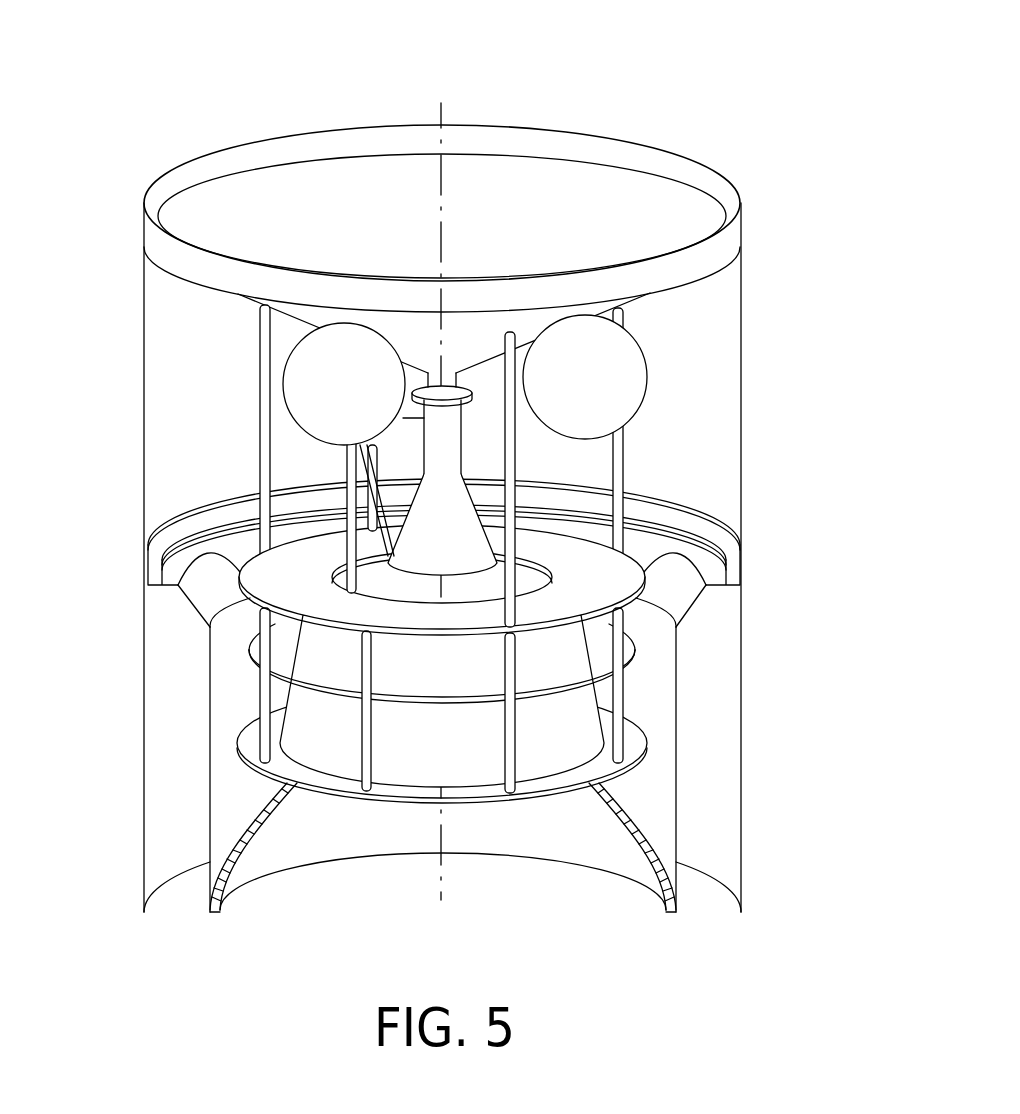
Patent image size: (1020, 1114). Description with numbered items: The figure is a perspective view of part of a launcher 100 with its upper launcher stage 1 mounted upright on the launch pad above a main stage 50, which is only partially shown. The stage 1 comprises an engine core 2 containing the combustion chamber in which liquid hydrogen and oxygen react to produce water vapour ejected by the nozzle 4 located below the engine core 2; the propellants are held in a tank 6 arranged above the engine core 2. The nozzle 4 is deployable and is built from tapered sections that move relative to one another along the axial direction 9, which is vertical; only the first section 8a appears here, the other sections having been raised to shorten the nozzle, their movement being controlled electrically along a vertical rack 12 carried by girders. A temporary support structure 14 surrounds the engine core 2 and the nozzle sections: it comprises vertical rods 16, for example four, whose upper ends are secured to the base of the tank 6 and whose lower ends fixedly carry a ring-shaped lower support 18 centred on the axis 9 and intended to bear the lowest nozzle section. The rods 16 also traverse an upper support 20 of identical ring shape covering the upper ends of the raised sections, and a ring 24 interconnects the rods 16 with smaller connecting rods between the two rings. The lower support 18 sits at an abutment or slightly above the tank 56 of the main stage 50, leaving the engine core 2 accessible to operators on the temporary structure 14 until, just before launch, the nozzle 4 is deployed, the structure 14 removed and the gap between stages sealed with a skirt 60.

The launcher 100 is at (451, 468).
The launcher stage 1 is at (405, 434).
The tank 6 is at (738, 234).
The skirt 60 is at (742, 331).
The vertical rods 16 is at (263, 331).
The temporary support structure 14 is at (400, 454).
The vertical rack 12 is at (340, 467).
The engine core 2 is at (485, 457).
The first section 8a is at (492, 580).
The upper support 20 is at (162, 563).
The nozzle 4 is at (480, 700).
The ring 24 is at (580, 692).
The lower support 18 is at (241, 744).
The axial direction 9 is at (445, 878).
The tank 56 is at (568, 848).
The main stage 50 is at (681, 852).